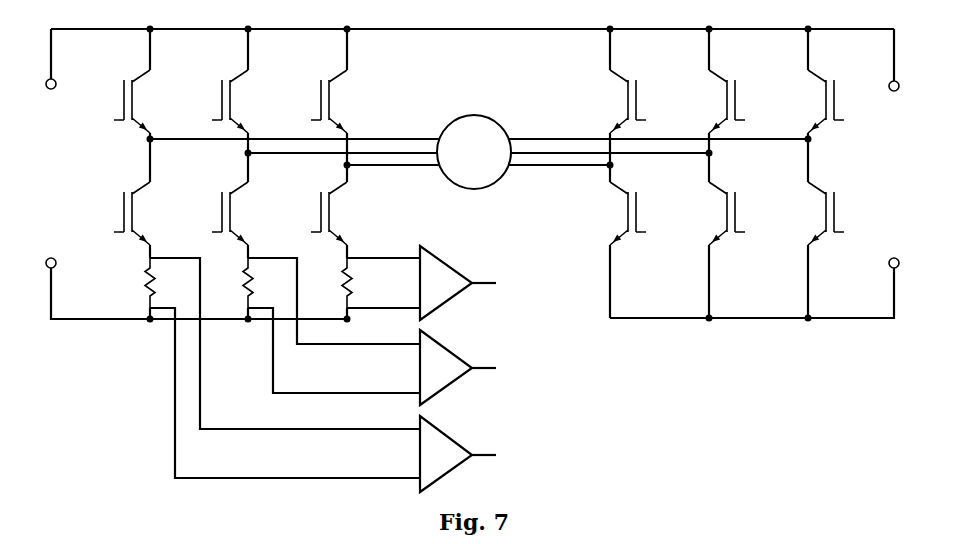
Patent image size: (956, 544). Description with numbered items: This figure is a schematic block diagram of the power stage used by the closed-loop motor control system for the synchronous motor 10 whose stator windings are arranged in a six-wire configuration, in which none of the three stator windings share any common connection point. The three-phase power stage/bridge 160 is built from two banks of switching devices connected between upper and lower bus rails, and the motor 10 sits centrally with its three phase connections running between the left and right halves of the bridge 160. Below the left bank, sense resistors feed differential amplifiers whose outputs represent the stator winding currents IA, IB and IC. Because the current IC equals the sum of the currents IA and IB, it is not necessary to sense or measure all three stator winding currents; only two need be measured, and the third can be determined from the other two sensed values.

The synchronous motor 10 is at (449, 122).
The 3-phase power stage/bridge 160 is at (787, 340).
The stator winding current IA is at (337, 375).
The stator winding current IB is at (385, 331).
The stator winding current IC is at (435, 283).